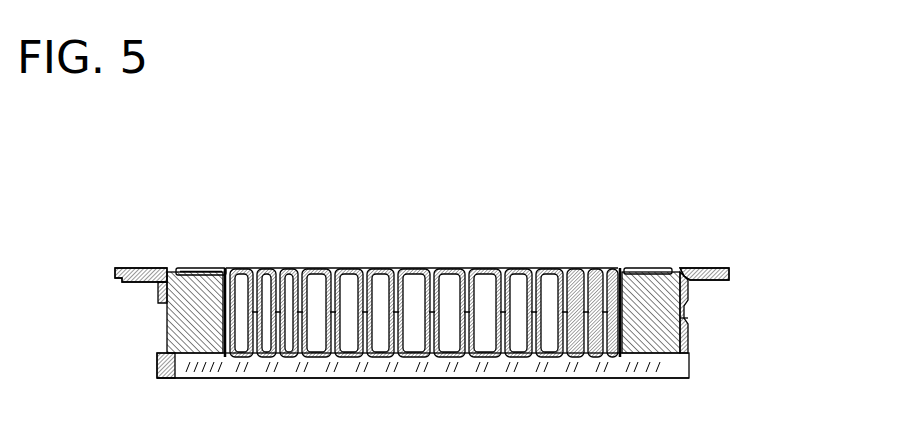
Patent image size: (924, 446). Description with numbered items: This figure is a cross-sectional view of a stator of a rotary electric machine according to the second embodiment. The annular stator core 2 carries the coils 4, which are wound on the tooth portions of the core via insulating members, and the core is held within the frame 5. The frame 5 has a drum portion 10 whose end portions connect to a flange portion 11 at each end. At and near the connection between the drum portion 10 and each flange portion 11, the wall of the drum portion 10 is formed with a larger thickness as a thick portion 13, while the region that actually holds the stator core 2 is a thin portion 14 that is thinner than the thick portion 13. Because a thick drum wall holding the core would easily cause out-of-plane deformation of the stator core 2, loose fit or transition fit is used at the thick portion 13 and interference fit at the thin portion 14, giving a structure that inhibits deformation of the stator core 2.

The stator core 2 is at (193, 332).
The coils 4 is at (207, 268).
The frame 5 is at (730, 268).
The drum portion 10 is at (685, 322).
The flange portion 11 is at (693, 268).
The thick portion 13 is at (683, 293).
The thin portion 14 is at (685, 348).